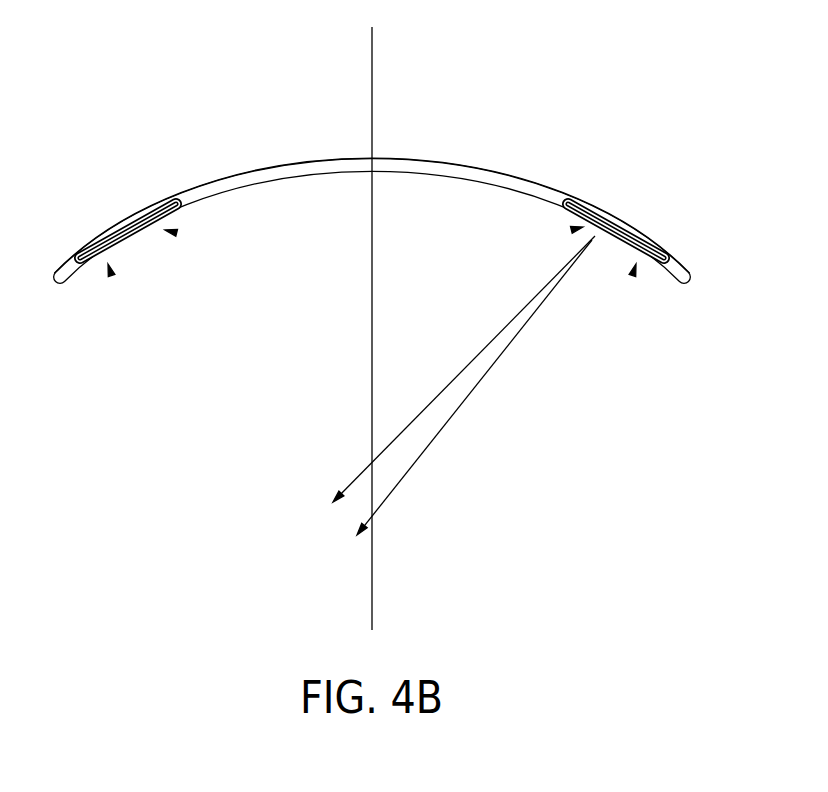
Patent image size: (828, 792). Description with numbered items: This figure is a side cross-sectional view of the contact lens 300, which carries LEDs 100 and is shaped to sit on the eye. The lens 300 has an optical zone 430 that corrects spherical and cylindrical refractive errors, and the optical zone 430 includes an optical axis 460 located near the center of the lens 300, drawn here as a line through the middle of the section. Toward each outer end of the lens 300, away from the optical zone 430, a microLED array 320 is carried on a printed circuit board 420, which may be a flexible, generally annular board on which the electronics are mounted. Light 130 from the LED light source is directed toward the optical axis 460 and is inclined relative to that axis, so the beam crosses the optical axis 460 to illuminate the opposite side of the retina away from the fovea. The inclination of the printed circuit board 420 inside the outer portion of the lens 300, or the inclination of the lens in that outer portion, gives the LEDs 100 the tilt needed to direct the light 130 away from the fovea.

The LEDs 100 is at (177, 233).
The light 130 is at (455, 412).
The contact lens 300 is at (203, 185).
The microLED array 320 is at (112, 275).
The printed circuit board 420 is at (135, 222).
The optical zone 430 is at (295, 163).
The optical axis 460 is at (372, 103).